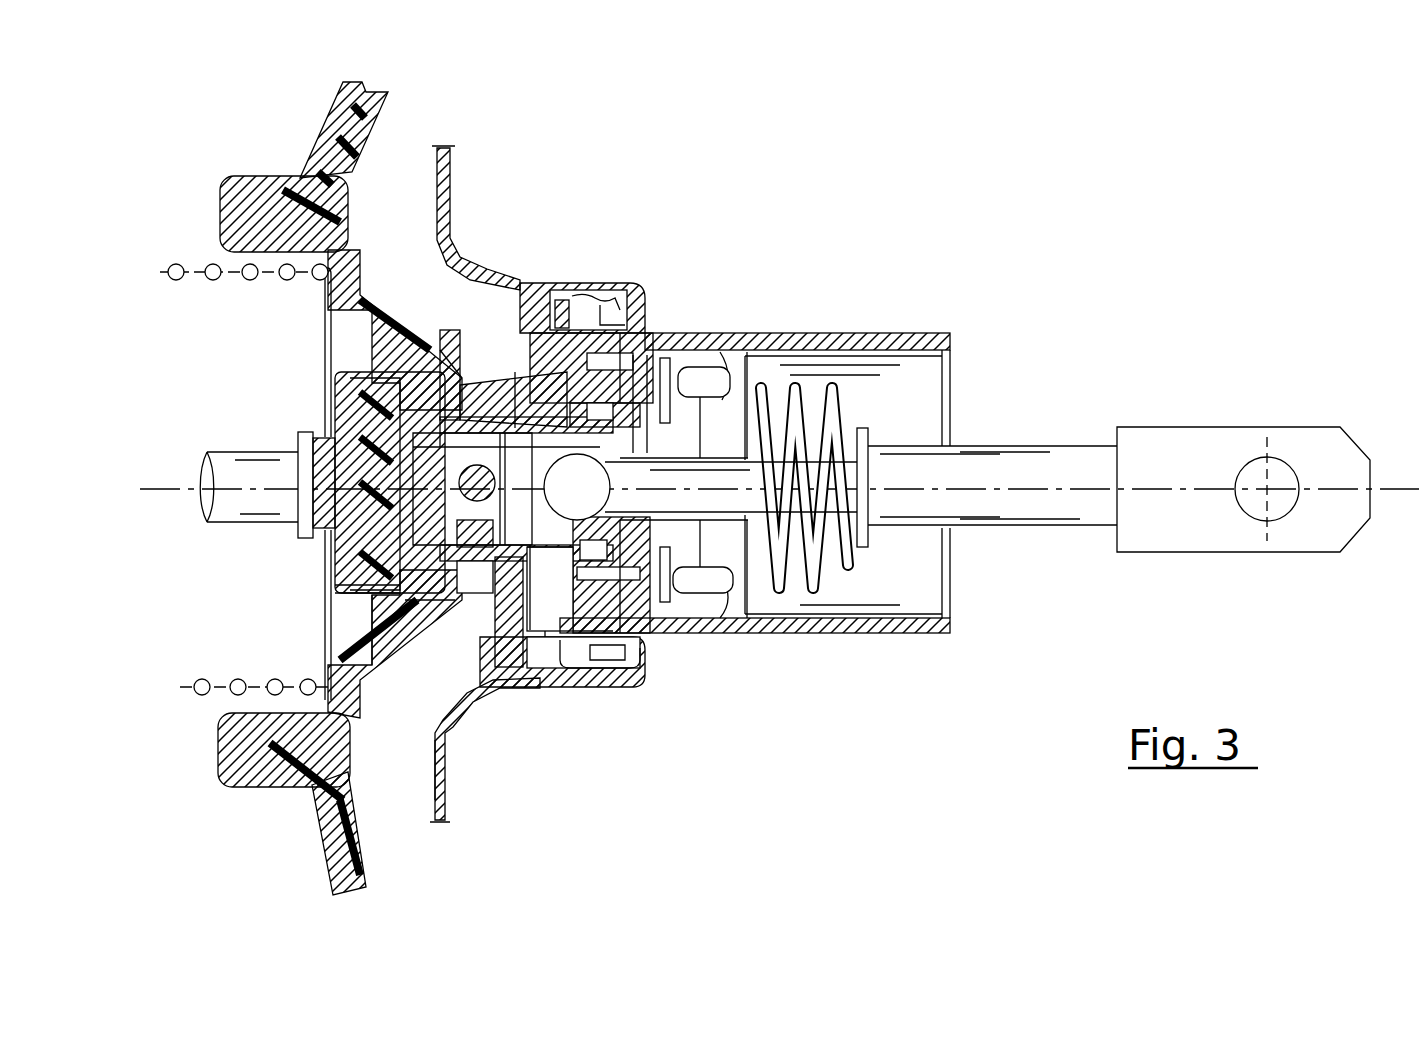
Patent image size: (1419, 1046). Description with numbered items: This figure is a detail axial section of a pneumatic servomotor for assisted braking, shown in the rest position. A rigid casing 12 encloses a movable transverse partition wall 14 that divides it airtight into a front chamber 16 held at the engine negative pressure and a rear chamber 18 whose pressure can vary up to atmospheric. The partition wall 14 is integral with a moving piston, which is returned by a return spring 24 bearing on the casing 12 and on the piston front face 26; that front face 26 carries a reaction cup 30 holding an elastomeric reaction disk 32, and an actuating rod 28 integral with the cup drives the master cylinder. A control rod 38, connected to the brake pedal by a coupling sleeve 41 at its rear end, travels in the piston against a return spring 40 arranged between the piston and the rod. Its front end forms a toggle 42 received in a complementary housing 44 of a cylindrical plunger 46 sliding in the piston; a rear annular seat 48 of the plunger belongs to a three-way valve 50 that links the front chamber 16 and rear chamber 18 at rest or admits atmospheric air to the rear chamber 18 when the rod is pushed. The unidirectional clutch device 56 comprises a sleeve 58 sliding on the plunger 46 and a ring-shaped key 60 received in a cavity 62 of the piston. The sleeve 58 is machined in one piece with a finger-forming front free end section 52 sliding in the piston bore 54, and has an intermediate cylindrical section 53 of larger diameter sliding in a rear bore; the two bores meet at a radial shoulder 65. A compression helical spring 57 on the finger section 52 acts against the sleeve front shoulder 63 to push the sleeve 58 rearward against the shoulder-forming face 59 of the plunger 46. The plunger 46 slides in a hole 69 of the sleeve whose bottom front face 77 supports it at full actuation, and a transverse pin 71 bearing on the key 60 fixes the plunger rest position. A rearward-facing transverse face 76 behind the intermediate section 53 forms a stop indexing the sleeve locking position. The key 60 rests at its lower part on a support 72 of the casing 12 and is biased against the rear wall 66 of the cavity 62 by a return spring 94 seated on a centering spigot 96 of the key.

The rigid casing 12 is at (450, 165).
The transverse partition wall 14 is at (335, 123).
The front chamber 16 is at (148, 127).
The rear chamber 18 is at (392, 184).
The return spring 24 is at (176, 264).
The front face 26 is at (330, 318).
The actuating rod 28 is at (233, 503).
The reaction cup 30 is at (315, 530).
The reaction disk 32 is at (327, 560).
The control rod 38 is at (1005, 462).
The return spring 40 is at (830, 575).
The coupling sleeve 41 is at (1160, 440).
The toggle 42 is at (645, 650).
The housing 44 is at (690, 375).
The plunger 46 is at (478, 390).
The rear annular seat 48 is at (698, 542).
The three-way valve 50 is at (692, 625).
The finger-forming front free end section 52 is at (300, 442).
The intermediate cylindrical section 53 is at (417, 657).
The bore 54 is at (388, 462).
The unidirectional clutch device 56 is at (540, 345).
The compression helical spring 57 is at (353, 620).
The sleeve 58 is at (473, 693).
The shoulder-forming face 59 is at (610, 372).
The key 60 is at (508, 645).
The cavity 62 is at (575, 320).
The front shoulder 63 is at (345, 645).
The radial shoulder 65 is at (455, 385).
The rear wall 66 is at (628, 300).
The hole 69 is at (547, 533).
The transverse pin 71 is at (516, 420).
The support 72 is at (545, 655).
The transverse face 76 is at (497, 425).
The bottom front face 77 is at (363, 607).
The return spring 94 is at (450, 733).
The centering spigot 96 is at (550, 662).